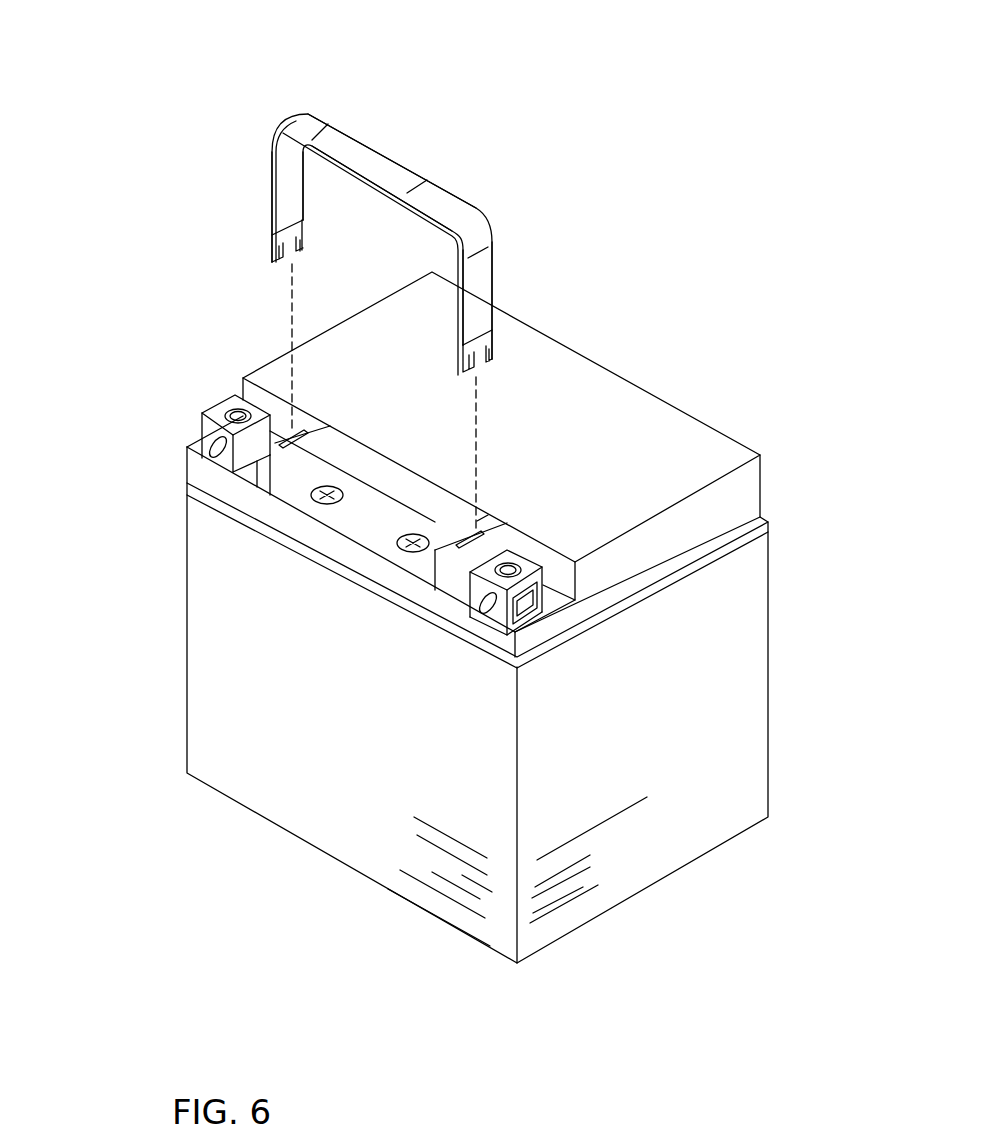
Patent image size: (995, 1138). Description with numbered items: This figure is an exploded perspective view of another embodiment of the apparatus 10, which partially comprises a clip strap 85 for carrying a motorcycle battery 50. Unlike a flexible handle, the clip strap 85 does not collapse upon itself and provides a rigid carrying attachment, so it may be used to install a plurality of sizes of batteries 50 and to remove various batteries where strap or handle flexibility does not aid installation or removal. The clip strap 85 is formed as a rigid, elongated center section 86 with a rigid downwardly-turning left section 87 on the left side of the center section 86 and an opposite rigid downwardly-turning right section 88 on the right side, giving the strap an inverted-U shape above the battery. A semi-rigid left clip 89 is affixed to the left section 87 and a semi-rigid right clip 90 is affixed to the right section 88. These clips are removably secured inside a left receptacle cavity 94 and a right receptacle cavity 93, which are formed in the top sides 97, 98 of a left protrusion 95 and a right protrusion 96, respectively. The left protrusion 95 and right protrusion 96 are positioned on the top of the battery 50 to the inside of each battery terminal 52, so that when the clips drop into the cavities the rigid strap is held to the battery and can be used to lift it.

The apparatus 10 is at (548, 143).
The motorcycle battery 50 is at (752, 712).
The battery terminal 52 is at (528, 598).
The clip strap 85 is at (347, 108).
The center section 86 is at (403, 167).
The left section 87 is at (272, 170).
The right section 88 is at (492, 263).
The left clip 89 is at (272, 245).
The right clip 90 is at (493, 347).
The right receptacle cavity 93 is at (507, 527).
The left receptacle cavity 94 is at (280, 437).
The left protrusion 95 is at (225, 477).
The right protrusion 96 is at (428, 590).
The top side of left protrusion 97 is at (262, 450).
The top side of right protrusion 98 is at (450, 553).